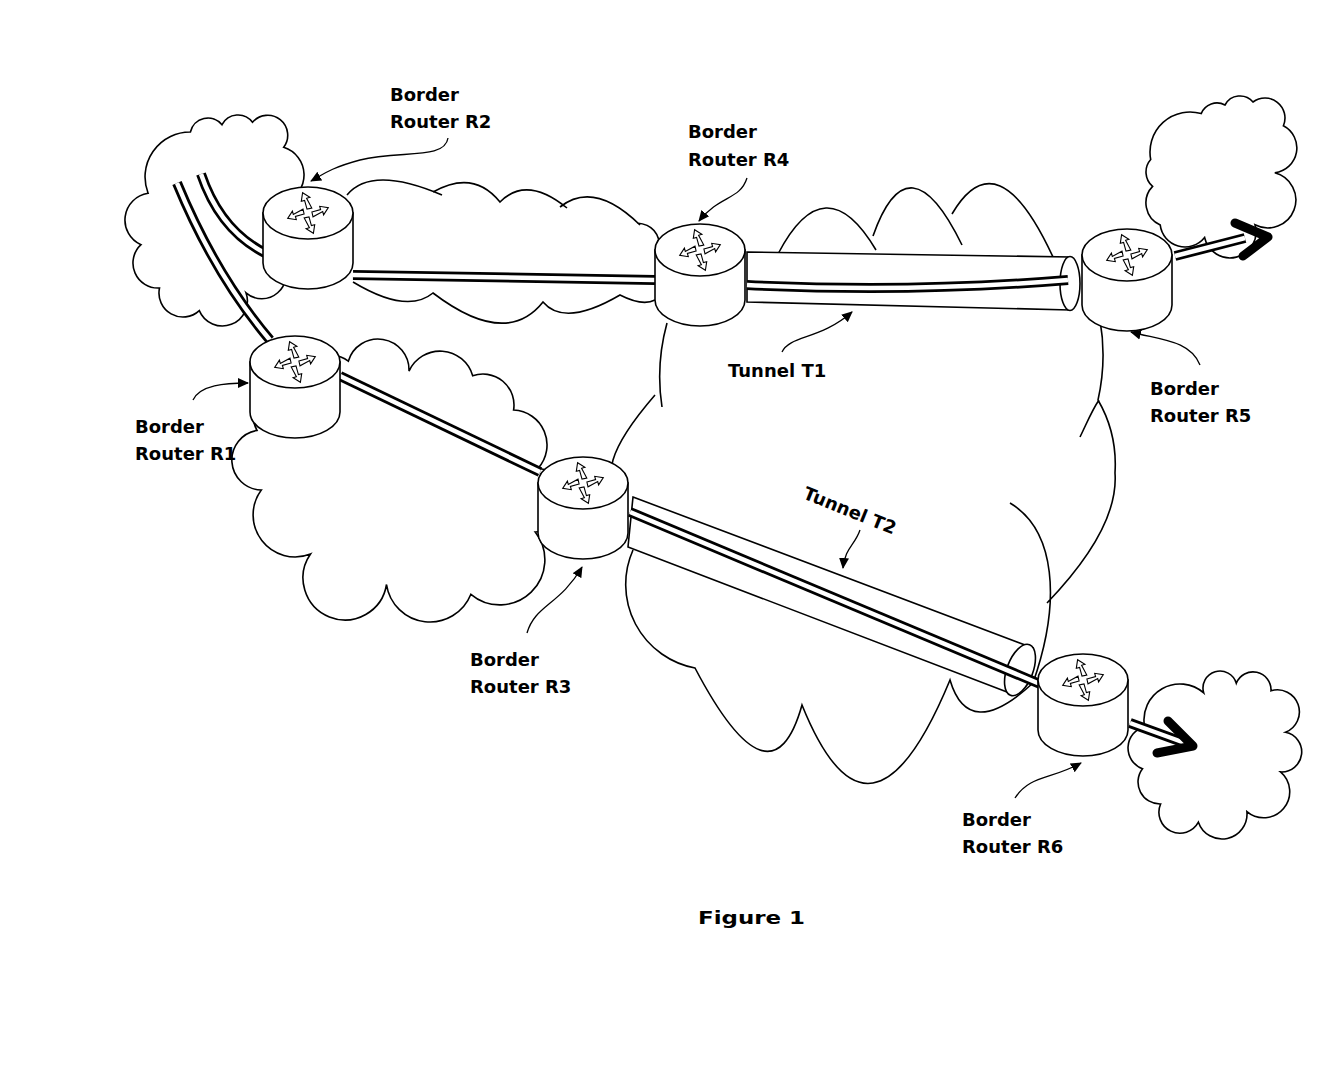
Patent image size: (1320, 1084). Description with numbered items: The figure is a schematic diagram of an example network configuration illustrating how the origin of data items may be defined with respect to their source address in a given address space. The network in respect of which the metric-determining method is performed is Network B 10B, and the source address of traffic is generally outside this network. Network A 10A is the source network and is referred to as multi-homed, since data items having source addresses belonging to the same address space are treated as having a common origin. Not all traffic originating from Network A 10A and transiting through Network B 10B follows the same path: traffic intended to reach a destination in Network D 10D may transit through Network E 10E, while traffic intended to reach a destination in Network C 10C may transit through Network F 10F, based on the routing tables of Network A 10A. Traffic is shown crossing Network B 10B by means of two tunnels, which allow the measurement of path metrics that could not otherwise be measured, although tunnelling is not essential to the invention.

The Network A 10A is at (219, 122).
The Network B 10B is at (830, 208).
The Network C 10C is at (1146, 176).
The Network D 10D is at (1215, 678).
The Network E 10E is at (312, 608).
The Network F 10F is at (499, 186).